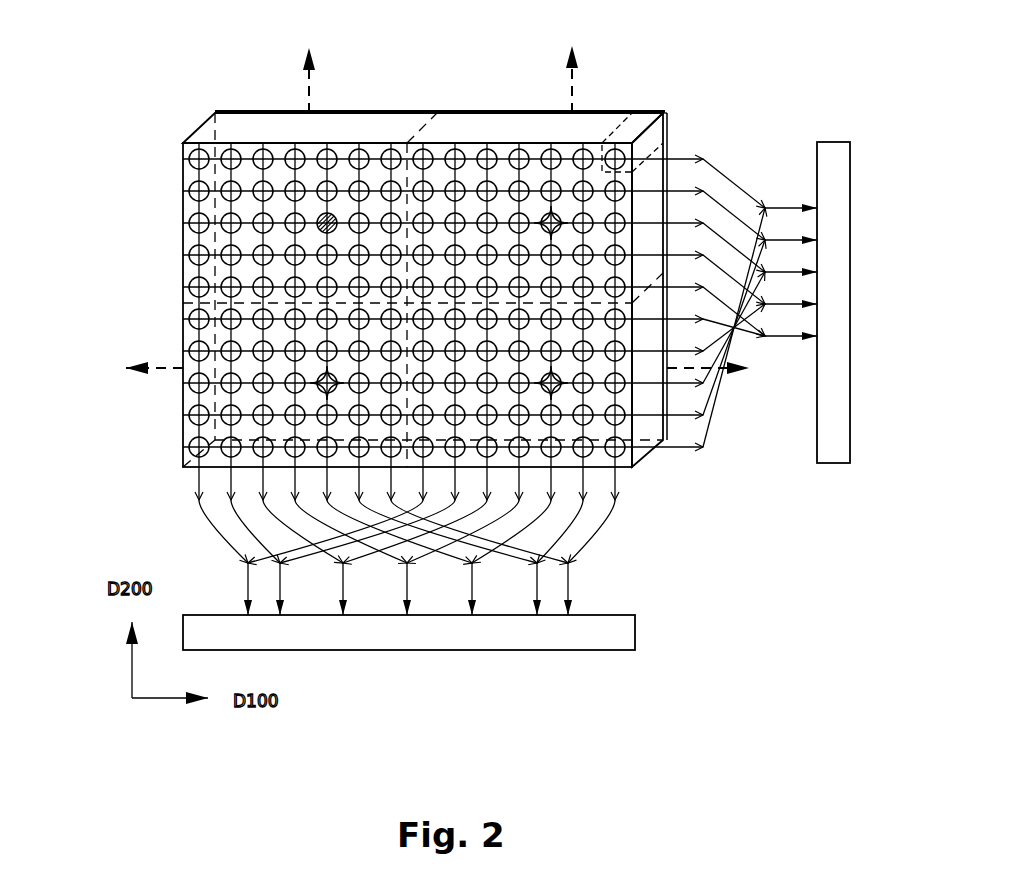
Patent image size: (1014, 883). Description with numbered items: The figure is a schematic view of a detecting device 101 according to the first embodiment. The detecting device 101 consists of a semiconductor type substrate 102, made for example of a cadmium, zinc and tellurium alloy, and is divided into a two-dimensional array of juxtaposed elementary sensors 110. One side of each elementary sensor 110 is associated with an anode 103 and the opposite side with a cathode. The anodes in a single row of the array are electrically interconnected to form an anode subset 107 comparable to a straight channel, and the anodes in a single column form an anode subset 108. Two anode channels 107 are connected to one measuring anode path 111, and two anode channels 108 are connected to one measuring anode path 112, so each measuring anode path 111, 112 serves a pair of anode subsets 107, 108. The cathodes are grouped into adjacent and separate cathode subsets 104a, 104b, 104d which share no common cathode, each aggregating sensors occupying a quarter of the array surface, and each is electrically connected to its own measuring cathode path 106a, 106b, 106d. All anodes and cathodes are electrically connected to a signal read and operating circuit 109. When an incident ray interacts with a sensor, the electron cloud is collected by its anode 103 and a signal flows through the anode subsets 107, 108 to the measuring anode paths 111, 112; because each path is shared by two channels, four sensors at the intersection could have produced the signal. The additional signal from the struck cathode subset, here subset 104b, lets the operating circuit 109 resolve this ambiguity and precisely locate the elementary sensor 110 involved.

The detecting device 101 is at (180, 114).
The semiconductor type substrate 102 is at (643, 438).
The anode 103 is at (554, 212).
The cathode subset 104a is at (367, 128).
The cathode subset 104b is at (472, 132).
The cathode subset 104d is at (183, 395).
The measuring cathode path 106a is at (309, 87).
The measuring cathode path 106b is at (572, 62).
The measuring cathode path 106d is at (150, 366).
The anode subset 107 is at (673, 450).
The anode subset 108 is at (522, 473).
The signal read and operating circuit 109 is at (833, 142).
The elementary sensor 110 is at (633, 127).
The measuring anode path 111 is at (778, 237).
The measuring anode path 112 is at (247, 583).